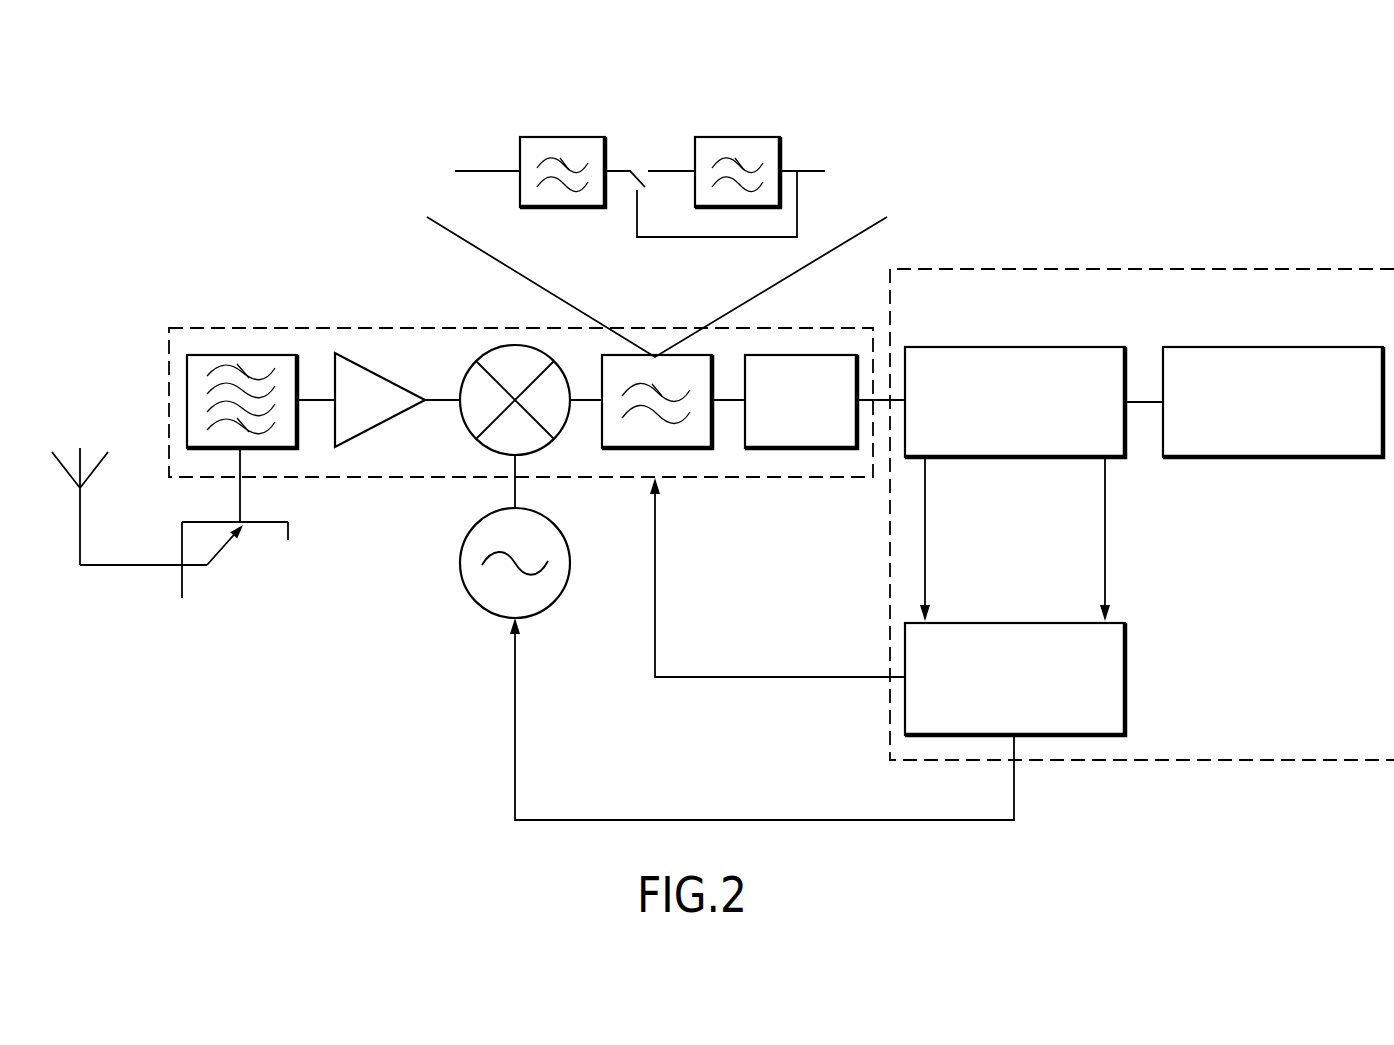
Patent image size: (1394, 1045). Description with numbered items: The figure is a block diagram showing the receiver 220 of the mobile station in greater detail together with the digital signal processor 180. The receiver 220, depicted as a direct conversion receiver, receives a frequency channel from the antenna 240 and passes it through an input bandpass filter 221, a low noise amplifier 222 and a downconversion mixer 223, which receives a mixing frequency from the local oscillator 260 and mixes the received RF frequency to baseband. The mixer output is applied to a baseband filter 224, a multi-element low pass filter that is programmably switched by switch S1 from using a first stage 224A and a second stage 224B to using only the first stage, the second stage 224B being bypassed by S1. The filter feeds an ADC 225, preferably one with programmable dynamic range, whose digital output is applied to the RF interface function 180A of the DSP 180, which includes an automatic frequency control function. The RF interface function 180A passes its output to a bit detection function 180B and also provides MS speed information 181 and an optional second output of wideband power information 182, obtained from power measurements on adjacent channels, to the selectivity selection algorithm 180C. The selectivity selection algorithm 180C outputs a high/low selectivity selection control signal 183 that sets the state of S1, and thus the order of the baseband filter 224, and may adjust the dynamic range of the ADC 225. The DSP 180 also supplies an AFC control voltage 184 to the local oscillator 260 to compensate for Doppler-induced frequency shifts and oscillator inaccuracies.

The receiver 220 is at (381, 322).
The input bandpass filter 221 is at (210, 355).
The low noise amplifier 222 is at (373, 430).
The downconversion mixer 223 is at (515, 345).
The baseband filter 224 is at (673, 448).
The first stage 224A is at (520, 158).
The second stage 224B is at (780, 158).
The switch S1 is at (627, 188).
The ADC 225 is at (778, 357).
The local oscillator 260 is at (462, 557).
The antenna 240 is at (97, 566).
The digital signal processor 180 is at (1127, 269).
The RF interface function 180A is at (972, 347).
The bit detection function 180B is at (1198, 347).
The Selectivity Selection Algorithm 180C is at (1125, 695).
The MS speed information 181 is at (923, 560).
The Wideband Power Information 182 is at (1103, 512).
The Selectivity Selection control signal 183 is at (710, 678).
The AFC control voltage 184 is at (1015, 793).